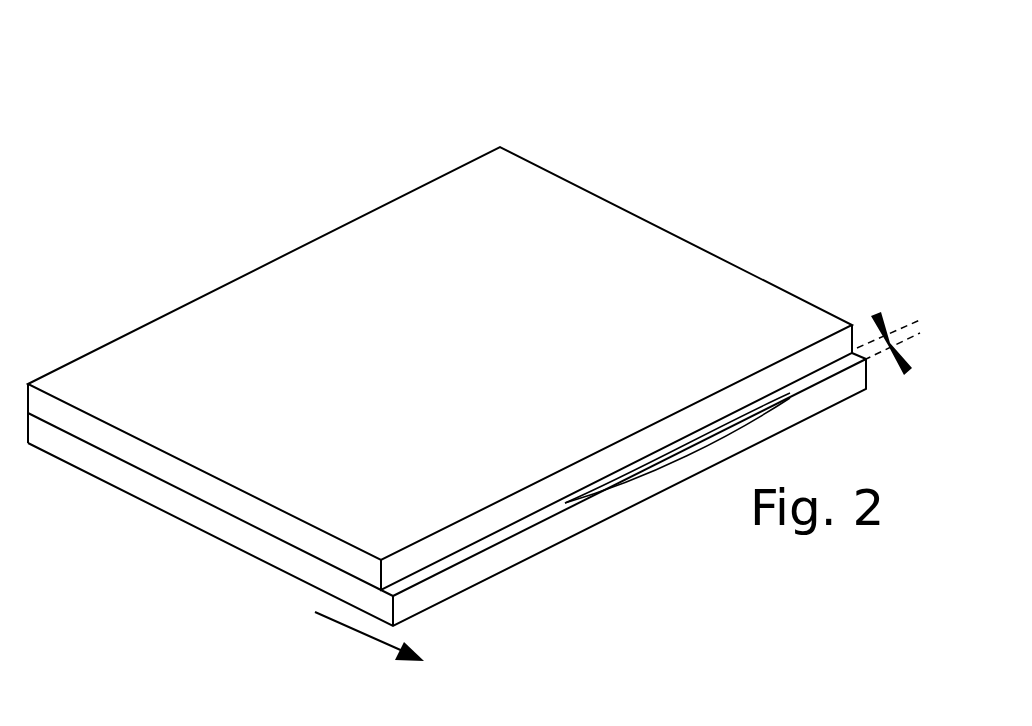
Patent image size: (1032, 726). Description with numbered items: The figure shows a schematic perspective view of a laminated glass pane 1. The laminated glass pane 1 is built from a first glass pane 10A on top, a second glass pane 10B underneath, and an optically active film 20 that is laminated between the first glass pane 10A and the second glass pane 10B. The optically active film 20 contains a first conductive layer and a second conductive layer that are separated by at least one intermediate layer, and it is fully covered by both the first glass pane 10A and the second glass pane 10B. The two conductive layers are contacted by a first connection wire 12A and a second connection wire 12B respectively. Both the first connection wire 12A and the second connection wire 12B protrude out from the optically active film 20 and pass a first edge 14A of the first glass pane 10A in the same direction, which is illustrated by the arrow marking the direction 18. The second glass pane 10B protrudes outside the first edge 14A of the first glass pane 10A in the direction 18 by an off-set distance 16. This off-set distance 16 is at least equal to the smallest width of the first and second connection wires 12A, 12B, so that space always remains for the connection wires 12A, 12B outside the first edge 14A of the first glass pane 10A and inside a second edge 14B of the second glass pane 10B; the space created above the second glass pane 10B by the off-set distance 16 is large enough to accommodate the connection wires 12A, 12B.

The laminated glass pane 1 is at (160, 208).
The first glass pane 10A is at (553, 195).
The second glass pane 10B is at (152, 493).
The first connection wire 12A is at (700, 435).
The second connection wire 12B is at (700, 433).
The first edge 14A is at (500, 517).
The second edge 14B is at (457, 582).
The off-set distance 16 is at (890, 360).
The direction 18 is at (382, 636).
The optically active film 20 is at (243, 521).